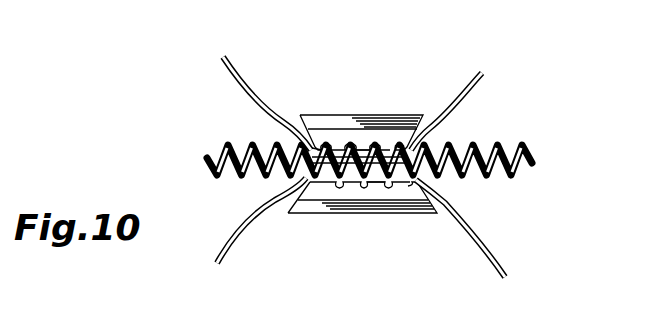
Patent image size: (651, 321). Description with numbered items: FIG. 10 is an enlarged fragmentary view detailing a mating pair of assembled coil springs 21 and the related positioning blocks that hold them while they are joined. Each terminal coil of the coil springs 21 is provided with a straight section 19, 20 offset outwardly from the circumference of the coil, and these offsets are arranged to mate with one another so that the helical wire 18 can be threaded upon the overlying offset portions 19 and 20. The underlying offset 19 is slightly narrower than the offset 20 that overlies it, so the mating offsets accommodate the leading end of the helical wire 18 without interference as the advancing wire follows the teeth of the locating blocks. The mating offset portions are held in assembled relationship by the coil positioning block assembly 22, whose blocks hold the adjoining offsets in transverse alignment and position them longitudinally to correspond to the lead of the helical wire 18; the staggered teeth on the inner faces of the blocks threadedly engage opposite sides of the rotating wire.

The helical wire 18 is at (233, 140).
The straight section 19 is at (316, 147).
The straight section 20 is at (362, 212).
The coil spring 21 is at (478, 76).
The coil positioning block assembly 22 is at (365, 109).